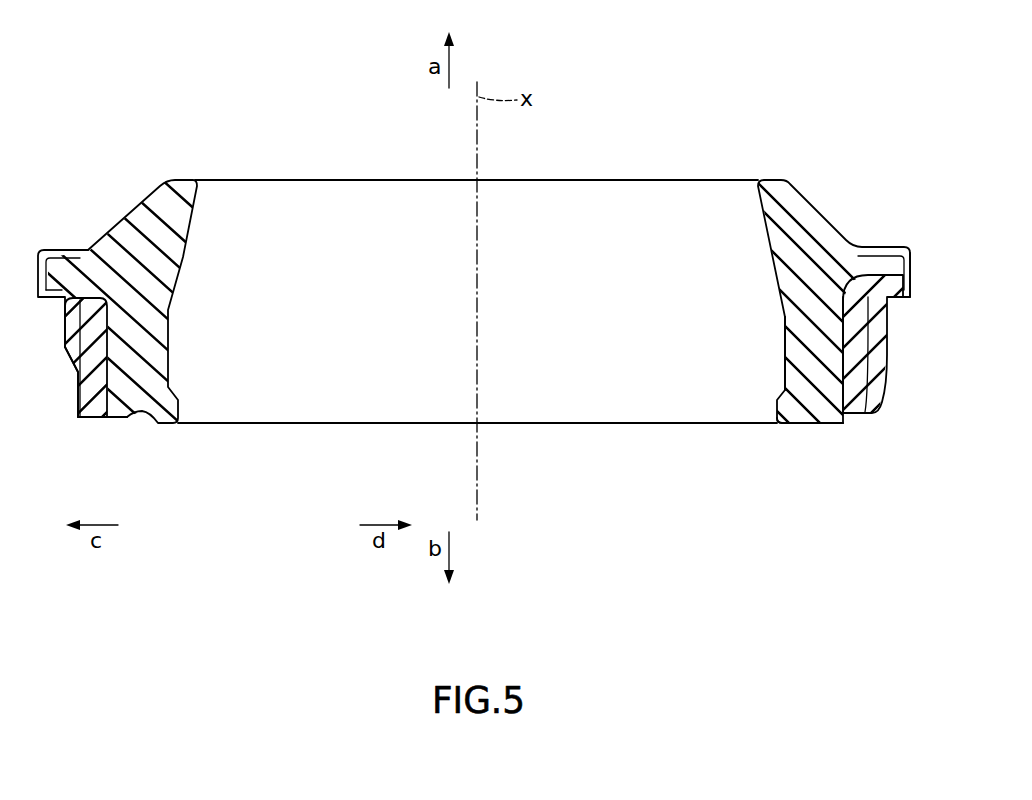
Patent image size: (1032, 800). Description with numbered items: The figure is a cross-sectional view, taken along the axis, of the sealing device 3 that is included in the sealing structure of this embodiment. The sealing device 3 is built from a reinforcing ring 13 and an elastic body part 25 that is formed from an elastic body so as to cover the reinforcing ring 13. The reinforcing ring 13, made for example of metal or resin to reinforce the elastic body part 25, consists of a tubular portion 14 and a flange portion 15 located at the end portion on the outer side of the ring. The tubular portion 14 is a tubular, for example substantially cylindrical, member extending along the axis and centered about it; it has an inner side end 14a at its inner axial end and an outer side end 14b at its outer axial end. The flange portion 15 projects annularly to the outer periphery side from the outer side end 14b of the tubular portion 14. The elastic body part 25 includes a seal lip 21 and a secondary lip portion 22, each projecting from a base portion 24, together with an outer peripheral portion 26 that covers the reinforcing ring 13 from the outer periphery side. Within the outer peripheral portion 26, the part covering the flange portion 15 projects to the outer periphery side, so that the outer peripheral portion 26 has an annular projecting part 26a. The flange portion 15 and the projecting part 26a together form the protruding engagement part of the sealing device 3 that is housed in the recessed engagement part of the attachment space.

The sealing device 3 is at (667, 98).
The reinforcing ring 13 is at (138, 335).
The tubular portion 14 is at (119, 394).
The inner side end 14a is at (98, 404).
The outer side end 14b is at (66, 310).
The flange portion 15 is at (70, 280).
The seal lip 21 is at (770, 202).
The secondary lip portion 22 is at (783, 410).
The base portion 24 is at (797, 333).
The elastic body part 25 is at (742, 288).
The outer peripheral portion 26 is at (900, 358).
The projecting part 26a is at (913, 266).